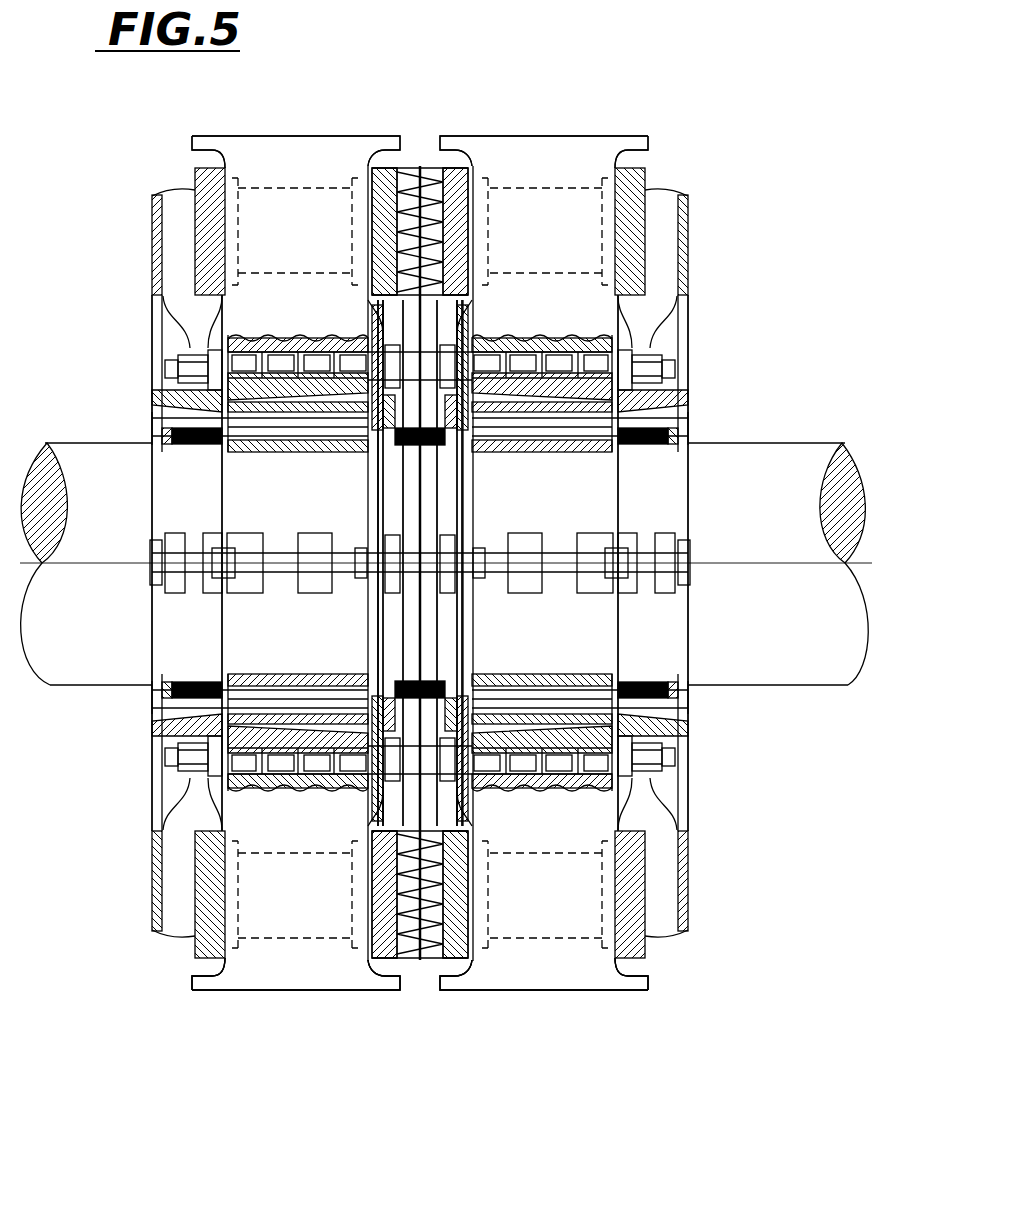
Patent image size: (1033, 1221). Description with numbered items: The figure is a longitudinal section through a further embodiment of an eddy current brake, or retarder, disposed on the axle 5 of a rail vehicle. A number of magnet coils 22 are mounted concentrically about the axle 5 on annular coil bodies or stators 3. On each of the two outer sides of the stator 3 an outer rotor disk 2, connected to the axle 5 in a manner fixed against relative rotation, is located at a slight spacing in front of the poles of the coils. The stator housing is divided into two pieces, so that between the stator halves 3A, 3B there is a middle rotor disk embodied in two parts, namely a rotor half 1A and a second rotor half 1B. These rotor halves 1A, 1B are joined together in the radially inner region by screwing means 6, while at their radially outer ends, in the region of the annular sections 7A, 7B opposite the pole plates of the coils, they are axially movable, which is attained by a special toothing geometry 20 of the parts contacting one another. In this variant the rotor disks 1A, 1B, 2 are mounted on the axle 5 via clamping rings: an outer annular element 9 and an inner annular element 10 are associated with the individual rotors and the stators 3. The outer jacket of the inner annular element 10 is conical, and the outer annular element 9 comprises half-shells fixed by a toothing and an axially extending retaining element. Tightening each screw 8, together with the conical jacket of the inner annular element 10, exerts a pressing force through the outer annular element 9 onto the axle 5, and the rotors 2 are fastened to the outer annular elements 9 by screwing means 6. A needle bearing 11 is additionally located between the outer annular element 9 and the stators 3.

The rotor half 1A is at (375, 165).
The second rotor half 1B is at (468, 162).
The outer rotor disk 2 is at (205, 230).
The stator 3 is at (307, 955).
The stator half 3A is at (250, 977).
The stator half 3B is at (505, 975).
The axle 5 is at (802, 655).
The screwing means 6 is at (178, 364).
The annular section 7A is at (373, 230).
The annular section 7B is at (467, 230).
The screw 8 is at (190, 420).
The outer annular element 9 is at (305, 380).
The inner annular element 10 is at (187, 452).
The needle bearing 11 is at (280, 353).
The toothing geometry 20 is at (424, 962).
The magnet coil 22 is at (275, 205).